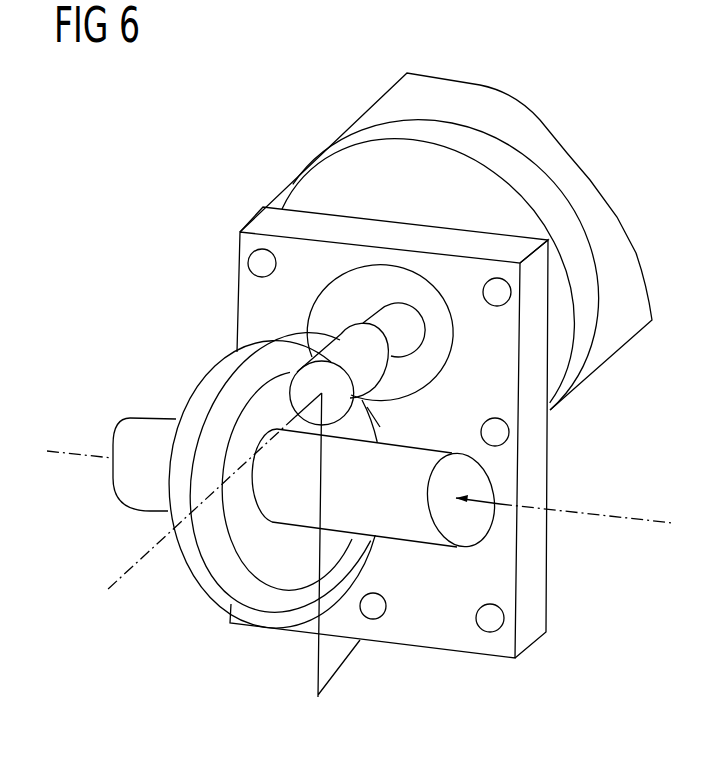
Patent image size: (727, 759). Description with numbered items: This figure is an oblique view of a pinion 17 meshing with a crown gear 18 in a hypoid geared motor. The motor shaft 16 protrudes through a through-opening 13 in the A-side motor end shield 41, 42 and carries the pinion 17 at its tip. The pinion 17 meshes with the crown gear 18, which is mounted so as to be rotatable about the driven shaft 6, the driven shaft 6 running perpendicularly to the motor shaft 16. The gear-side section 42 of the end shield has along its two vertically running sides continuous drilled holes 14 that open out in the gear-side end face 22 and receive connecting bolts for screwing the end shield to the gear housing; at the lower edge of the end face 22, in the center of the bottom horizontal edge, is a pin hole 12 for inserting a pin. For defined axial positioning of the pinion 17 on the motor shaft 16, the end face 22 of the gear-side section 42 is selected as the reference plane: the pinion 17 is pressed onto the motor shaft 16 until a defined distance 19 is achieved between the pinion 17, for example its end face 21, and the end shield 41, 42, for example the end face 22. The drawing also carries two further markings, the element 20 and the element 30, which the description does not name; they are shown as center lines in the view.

The driven shaft 6 is at (158, 427).
The pin hole 12 is at (388, 613).
The through-opening 13 is at (392, 302).
The continuous drilled holes 14 is at (490, 622).
The motor shaft 16 is at (393, 318).
The pinion 17 is at (350, 347).
The crown gear 18 is at (198, 592).
The defined distance 19 is at (347, 676).
The worm shaft axis 20 is at (118, 581).
The end face of the pinion 21 is at (315, 380).
The gear-side end face 22 is at (450, 622).
The output shaft axis 30 is at (658, 520).
The A-side motor end shield 41 is at (491, 149).
The gear-side section 42 is at (267, 224).